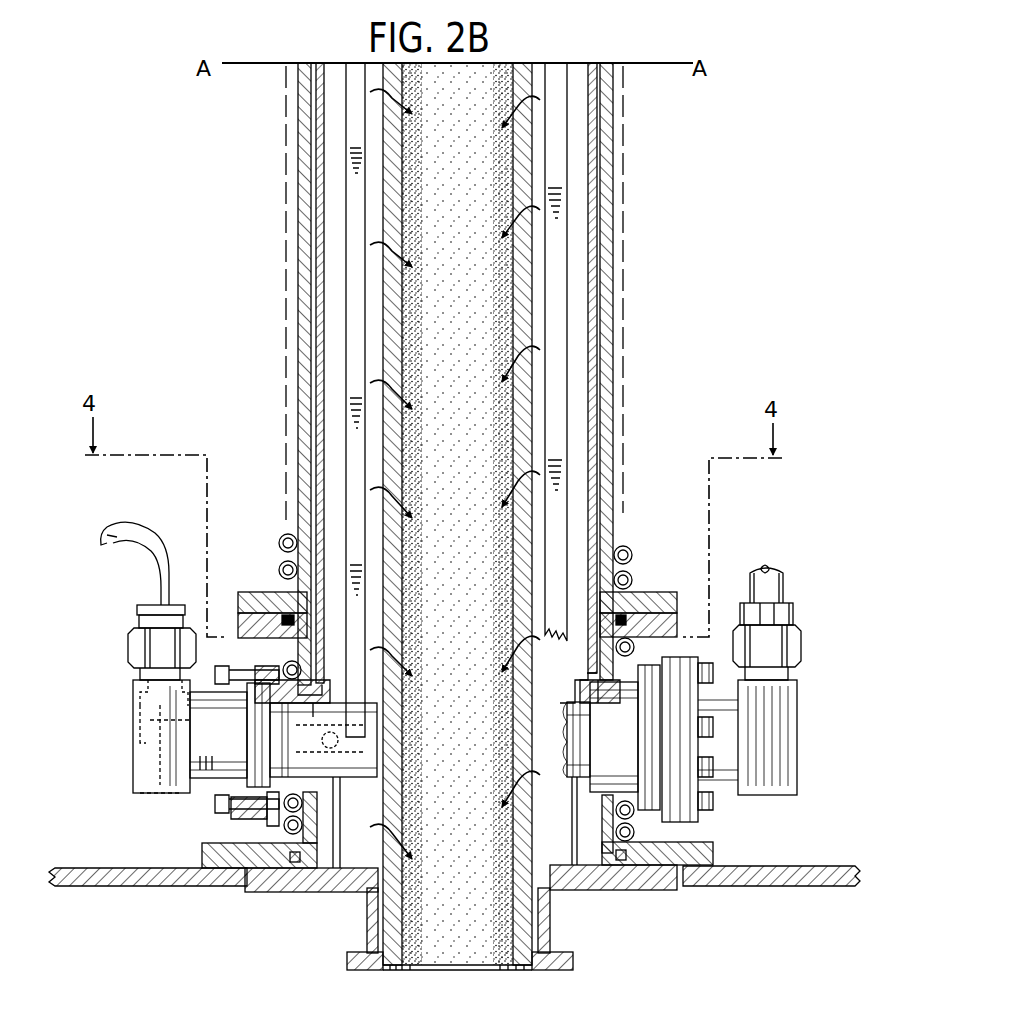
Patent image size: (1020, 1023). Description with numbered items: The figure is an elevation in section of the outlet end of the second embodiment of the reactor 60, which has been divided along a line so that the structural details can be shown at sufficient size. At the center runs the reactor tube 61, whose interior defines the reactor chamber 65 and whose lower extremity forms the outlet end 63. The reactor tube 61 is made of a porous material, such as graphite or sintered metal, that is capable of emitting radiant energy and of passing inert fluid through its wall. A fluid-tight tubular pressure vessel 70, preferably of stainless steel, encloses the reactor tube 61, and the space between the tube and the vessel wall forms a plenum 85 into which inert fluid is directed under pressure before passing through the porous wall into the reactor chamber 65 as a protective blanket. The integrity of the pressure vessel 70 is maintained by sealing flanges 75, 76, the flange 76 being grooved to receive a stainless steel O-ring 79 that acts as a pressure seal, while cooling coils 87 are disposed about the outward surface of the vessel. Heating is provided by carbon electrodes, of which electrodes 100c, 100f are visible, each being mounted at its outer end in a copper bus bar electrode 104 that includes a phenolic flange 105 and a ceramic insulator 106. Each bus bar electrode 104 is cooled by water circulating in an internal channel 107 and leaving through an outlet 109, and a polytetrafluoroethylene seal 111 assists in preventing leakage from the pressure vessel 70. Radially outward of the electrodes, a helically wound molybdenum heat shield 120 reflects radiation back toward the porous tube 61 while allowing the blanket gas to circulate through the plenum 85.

The reactor 60 is at (278, 188).
The reactor tube 61 is at (386, 314).
The outlet end 63 is at (472, 960).
The reactor chamber 65 is at (463, 628).
The pressure vessel 70 is at (300, 342).
The sealing flange 75 is at (251, 592).
The sealing flange 76 is at (247, 622).
The O-ring 79 is at (644, 592).
The plenum 85 is at (335, 239).
The cooling coils 87 is at (628, 556).
The carbon electrode 100c is at (553, 278).
The carbon electrode 100f is at (348, 365).
The copper bus bar electrode 104 is at (128, 726).
The phenolic flange 105 is at (221, 823).
The ceramic insulator 106 is at (344, 783).
The internal channel 107 is at (308, 742).
The outlet 109 is at (131, 642).
The polytetrafluoroethylene seal 111 is at (221, 763).
The heat shield 120 is at (586, 345).